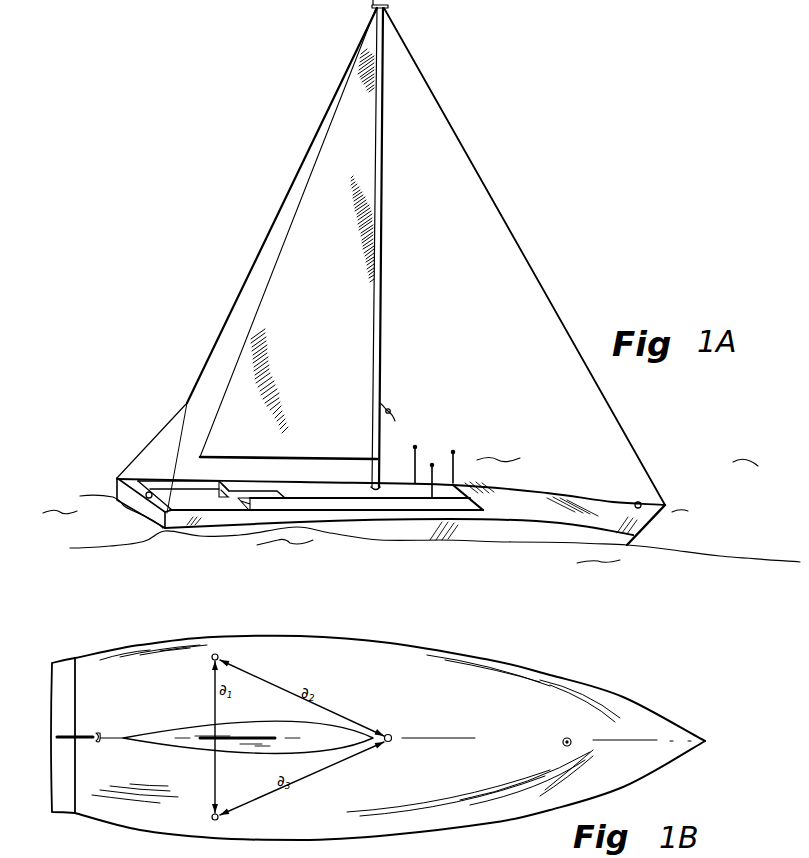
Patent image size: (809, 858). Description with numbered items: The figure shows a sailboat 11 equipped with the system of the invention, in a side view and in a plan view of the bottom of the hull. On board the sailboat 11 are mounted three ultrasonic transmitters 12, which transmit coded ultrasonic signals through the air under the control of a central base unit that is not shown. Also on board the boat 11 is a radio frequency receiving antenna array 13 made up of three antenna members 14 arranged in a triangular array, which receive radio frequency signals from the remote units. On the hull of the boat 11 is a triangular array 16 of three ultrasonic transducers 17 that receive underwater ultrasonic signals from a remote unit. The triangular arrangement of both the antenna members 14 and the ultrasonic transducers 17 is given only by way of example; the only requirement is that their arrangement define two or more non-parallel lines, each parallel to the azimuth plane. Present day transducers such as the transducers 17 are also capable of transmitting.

In FIG. 1A, the sailboat 11 is at (557, 490).
In FIG. 1A, the ultrasonic transmitters 12 is at (390, 411).
In FIG. 1A, the radio frequency receiving antenna array 13 is at (467, 406).
In FIG. 1A, the antenna members 14 is at (453, 452).
In FIG. 1B, the triangular array of ultrasonic transducers 16 is at (252, 717).
In FIG. 1B, the ultrasonic transducers 17 is at (385, 734).